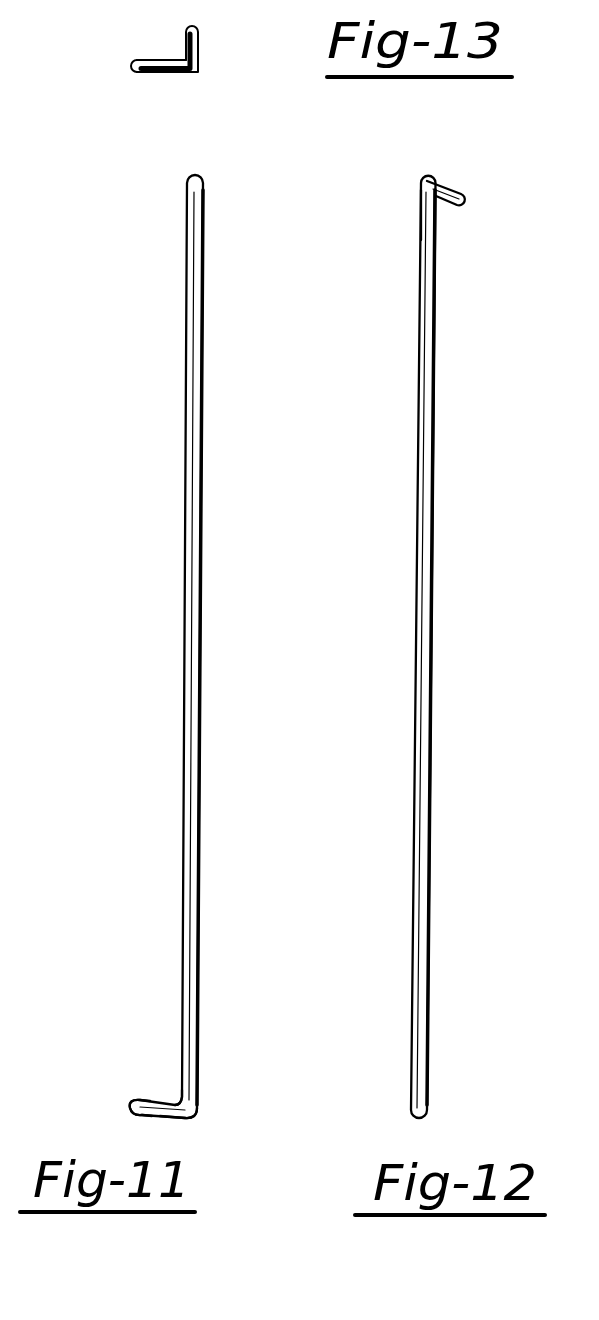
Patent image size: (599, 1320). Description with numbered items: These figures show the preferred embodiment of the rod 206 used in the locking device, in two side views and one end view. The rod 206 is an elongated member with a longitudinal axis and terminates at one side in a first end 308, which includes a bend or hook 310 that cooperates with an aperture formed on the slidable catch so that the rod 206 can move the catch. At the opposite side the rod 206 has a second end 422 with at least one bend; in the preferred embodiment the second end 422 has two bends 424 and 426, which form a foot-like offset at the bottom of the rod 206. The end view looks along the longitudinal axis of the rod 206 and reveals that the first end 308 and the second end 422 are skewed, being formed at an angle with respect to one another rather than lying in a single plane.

In FIG. 11, the rod 206 is at (194, 612).
In FIG. 12, the rod 206 is at (433, 622).
In FIG. 13, the rod 206 is at (195, 73).
In FIG. 12, the first end 308 is at (419, 222).
In FIG. 13, the first end 308 is at (199, 42).
In FIG. 12, the bend or hook 310 is at (446, 190).
In FIG. 11, the second end 422 is at (193, 1118).
In FIG. 13, the second end 422 is at (152, 73).
In FIG. 11, the bend 424 is at (181, 1097).
In FIG. 11, the bend 426 is at (140, 1101).